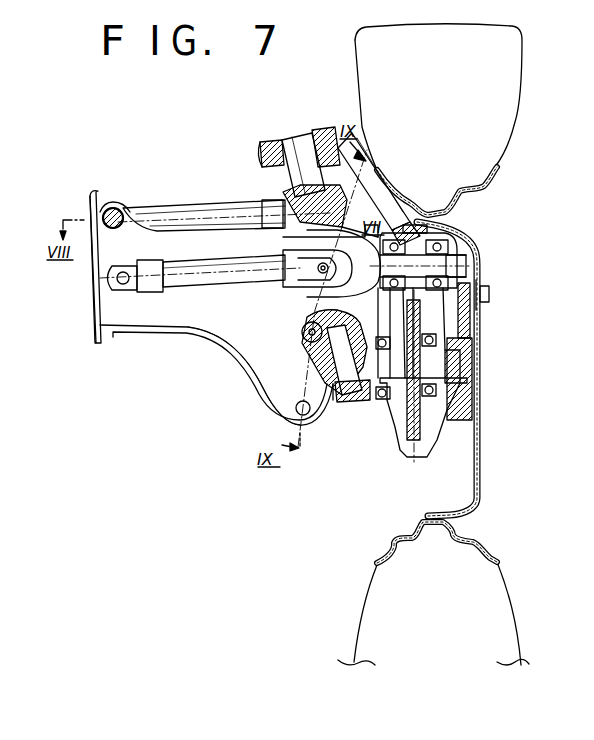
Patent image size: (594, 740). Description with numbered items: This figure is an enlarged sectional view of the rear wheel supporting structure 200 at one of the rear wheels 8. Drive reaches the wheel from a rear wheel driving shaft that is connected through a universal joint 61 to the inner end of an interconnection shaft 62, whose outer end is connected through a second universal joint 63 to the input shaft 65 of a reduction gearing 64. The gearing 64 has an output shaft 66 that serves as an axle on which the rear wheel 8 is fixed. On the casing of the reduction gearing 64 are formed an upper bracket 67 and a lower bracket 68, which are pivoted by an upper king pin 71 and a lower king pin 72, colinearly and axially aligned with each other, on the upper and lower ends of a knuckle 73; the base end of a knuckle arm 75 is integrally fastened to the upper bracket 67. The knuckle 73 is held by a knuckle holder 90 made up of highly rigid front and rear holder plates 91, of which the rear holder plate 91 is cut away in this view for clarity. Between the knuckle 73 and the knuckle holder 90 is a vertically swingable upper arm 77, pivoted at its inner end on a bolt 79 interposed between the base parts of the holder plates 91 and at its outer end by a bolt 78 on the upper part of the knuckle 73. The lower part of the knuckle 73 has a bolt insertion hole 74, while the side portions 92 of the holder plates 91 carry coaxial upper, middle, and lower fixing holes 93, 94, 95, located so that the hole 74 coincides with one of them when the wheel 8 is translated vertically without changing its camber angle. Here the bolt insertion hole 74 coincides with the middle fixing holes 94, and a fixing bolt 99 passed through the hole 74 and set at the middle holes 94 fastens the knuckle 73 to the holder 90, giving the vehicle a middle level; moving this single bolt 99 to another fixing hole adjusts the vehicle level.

The rear wheel 8 is at (353, 66).
The universal joint 61 is at (108, 281).
The interconnection shaft 62 is at (205, 275).
The universal joint 63 is at (466, 327).
The reduction gearing 64 is at (489, 292).
The input shaft 65 is at (442, 263).
The output shaft 66 is at (432, 367).
The upper bracket 67 is at (393, 185).
The lower bracket 68 is at (347, 400).
The upper king pin 71 is at (298, 147).
The lower king pin 72 is at (352, 392).
The knuckle 73 is at (307, 300).
The bolt insertion hole 74 is at (305, 342).
The knuckle arm 75 is at (282, 143).
The upper arm 77 is at (197, 204).
The bolt 78 is at (377, 177).
The bolt 79 is at (117, 200).
The knuckle holder 90 is at (140, 352).
The holder plate 91 is at (180, 333).
The side portion 92 is at (277, 392).
The upper fixing hole 93 is at (297, 248).
The middle fixing hole 94 is at (299, 349).
The lower fixing hole 95 is at (295, 416).
The fixing bolt 99 is at (301, 330).
The rear wheel supporting structure 200 is at (205, 495).